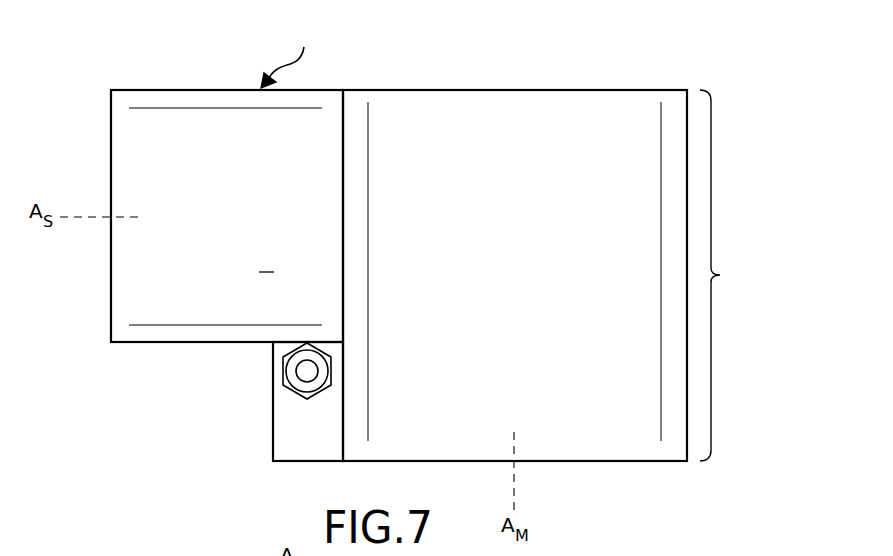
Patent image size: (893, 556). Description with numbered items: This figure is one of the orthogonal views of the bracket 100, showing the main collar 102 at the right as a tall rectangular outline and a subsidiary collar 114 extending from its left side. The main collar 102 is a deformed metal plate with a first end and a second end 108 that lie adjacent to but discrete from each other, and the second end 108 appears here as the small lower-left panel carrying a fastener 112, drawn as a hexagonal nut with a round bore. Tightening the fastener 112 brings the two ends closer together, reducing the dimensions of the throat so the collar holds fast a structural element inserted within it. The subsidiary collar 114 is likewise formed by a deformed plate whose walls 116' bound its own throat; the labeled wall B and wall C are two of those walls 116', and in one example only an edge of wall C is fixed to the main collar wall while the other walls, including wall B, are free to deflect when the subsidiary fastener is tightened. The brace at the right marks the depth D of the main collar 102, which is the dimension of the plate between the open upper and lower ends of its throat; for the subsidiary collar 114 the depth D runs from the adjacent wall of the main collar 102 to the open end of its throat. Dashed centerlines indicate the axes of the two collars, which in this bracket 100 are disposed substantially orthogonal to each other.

The bracket 100 is at (432, 243).
The main collar 102 is at (513, 115).
The second end 108 is at (255, 414).
The fastener 112 is at (290, 373).
The subsidiary collar 114 is at (150, 115).
The subsidiary collar wall 116' is at (206, 45).
The wall B is at (289, 54).
The wall C is at (266, 261).
The depth D is at (722, 275).